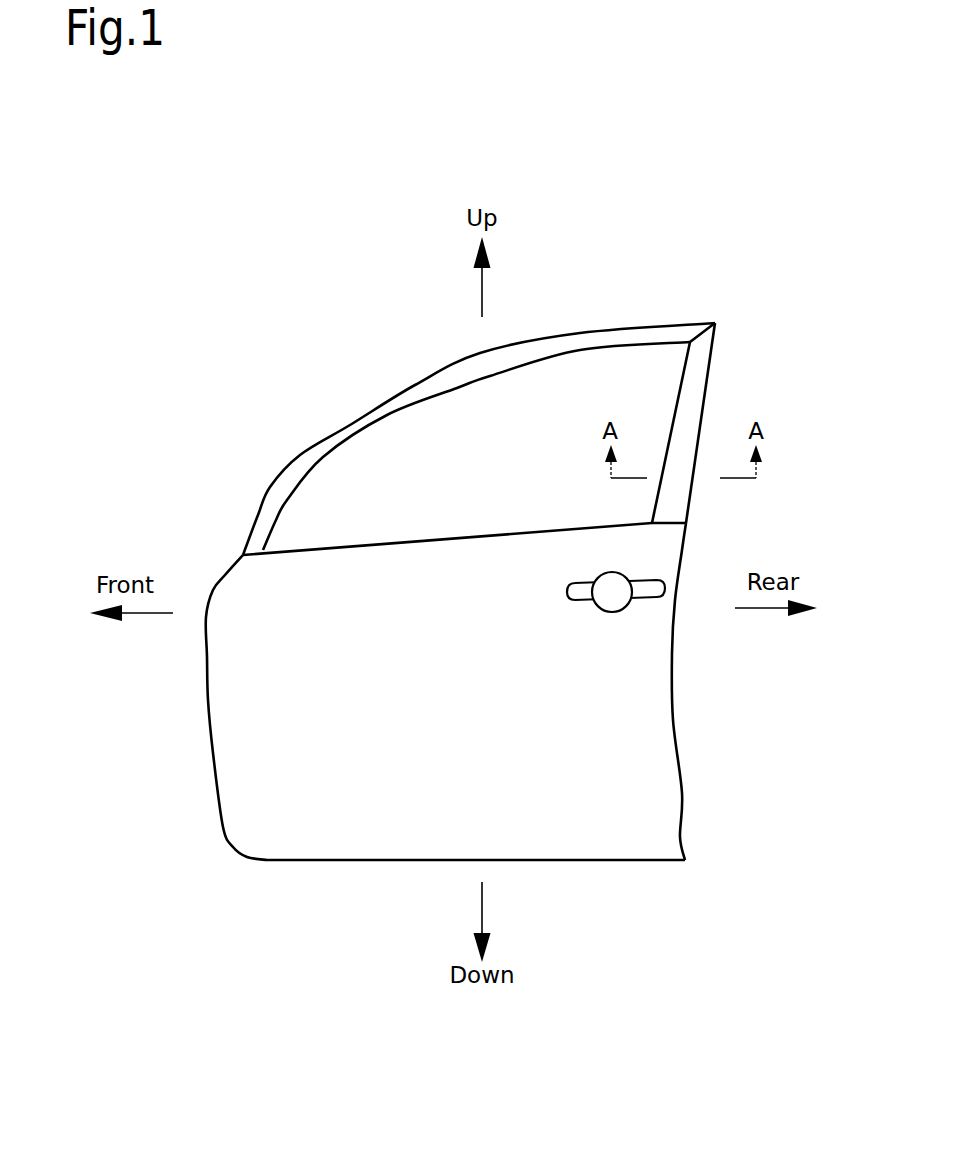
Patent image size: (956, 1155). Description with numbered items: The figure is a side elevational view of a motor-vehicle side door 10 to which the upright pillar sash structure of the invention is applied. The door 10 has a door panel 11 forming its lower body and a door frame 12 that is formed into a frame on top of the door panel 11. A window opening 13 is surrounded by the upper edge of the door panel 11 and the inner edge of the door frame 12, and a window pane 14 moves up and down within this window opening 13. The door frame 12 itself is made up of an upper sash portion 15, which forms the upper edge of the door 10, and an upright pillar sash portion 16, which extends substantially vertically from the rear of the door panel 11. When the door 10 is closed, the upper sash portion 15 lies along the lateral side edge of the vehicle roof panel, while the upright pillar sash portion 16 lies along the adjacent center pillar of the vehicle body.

The motor-vehicle side door 10 is at (288, 342).
The door panel 11 is at (223, 748).
The door frame 12 is at (732, 324).
The window opening 13 is at (390, 446).
The window pane 14 is at (447, 433).
The upper sash portion 15 is at (585, 338).
The upright pillar sash portion 16 is at (703, 369).